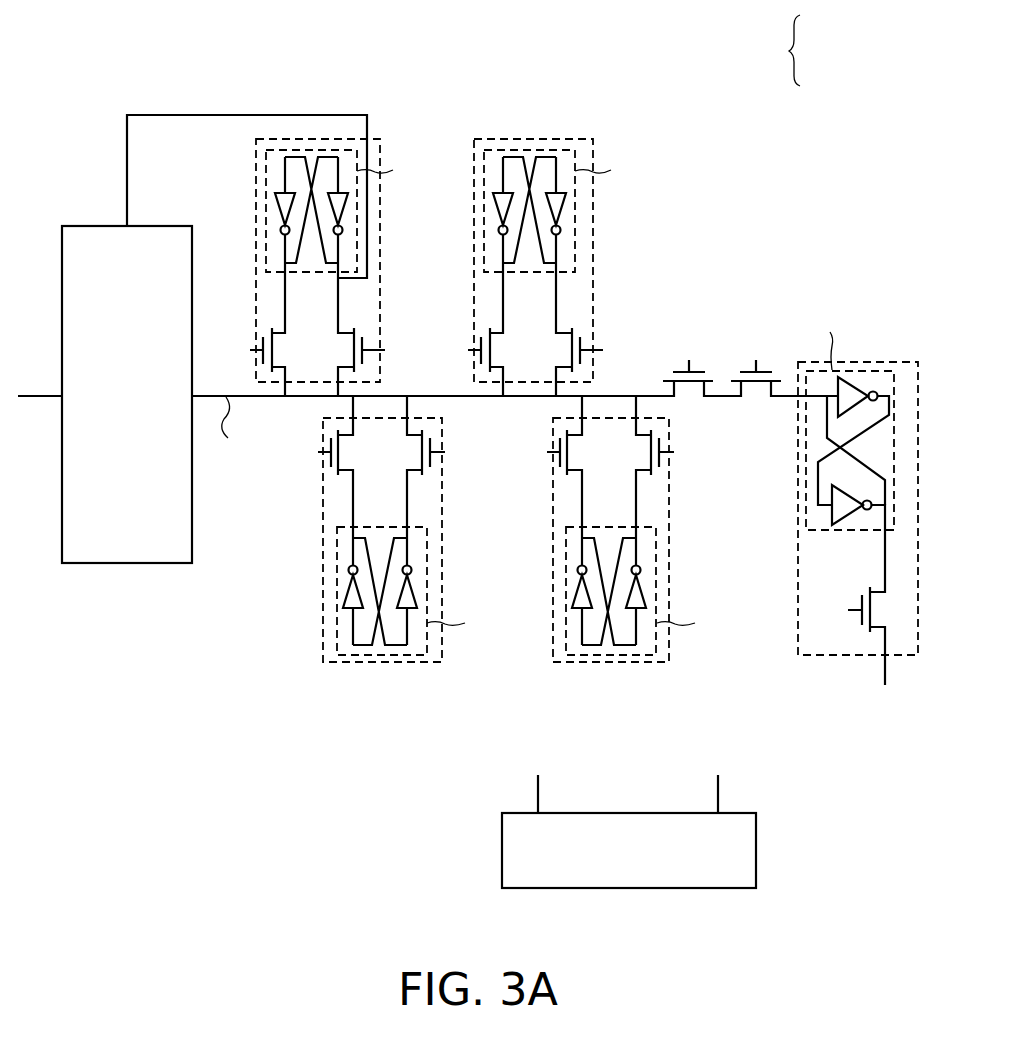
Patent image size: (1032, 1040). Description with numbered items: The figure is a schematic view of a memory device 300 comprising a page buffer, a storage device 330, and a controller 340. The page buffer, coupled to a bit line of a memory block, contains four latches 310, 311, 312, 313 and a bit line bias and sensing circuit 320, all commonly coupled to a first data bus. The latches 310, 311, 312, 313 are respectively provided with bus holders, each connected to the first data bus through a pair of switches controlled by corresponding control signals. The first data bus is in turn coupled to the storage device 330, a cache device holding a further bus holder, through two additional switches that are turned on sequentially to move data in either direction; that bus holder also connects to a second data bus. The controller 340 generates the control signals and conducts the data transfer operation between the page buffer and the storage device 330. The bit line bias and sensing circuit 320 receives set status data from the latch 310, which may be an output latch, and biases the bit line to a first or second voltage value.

The memory device 300 is at (477, 469).
The latch 310 is at (370, 136).
The latch 311 is at (416, 663).
The latch 312 is at (588, 137).
The latch 313 is at (645, 663).
The bit line bias and sensing circuit 320 is at (133, 563).
The storage device 330 is at (880, 362).
The controller 340 is at (756, 853).